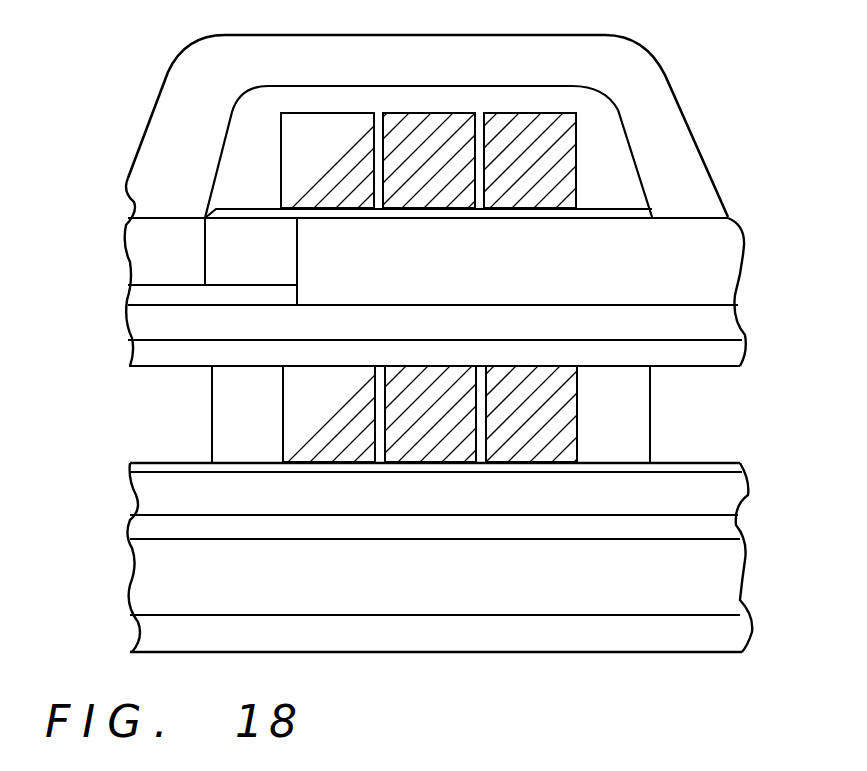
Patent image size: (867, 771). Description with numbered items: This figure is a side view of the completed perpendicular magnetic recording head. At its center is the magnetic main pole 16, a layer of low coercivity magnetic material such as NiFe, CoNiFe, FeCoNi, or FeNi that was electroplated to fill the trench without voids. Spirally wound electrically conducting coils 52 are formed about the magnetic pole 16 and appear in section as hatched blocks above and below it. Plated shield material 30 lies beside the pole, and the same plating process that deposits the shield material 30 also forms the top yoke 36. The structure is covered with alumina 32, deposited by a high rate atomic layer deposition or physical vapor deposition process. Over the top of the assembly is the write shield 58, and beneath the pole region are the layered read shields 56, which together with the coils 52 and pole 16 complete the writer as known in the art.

The write shield 58 is at (585, 50).
The hatched block 52 is at (545, 127).
The alumina 32 is at (258, 248).
The shield material 30 is at (170, 258).
The top yoke 36 is at (700, 265).
The magnetic main pole 16 is at (700, 320).
The read shields 56 is at (722, 493).